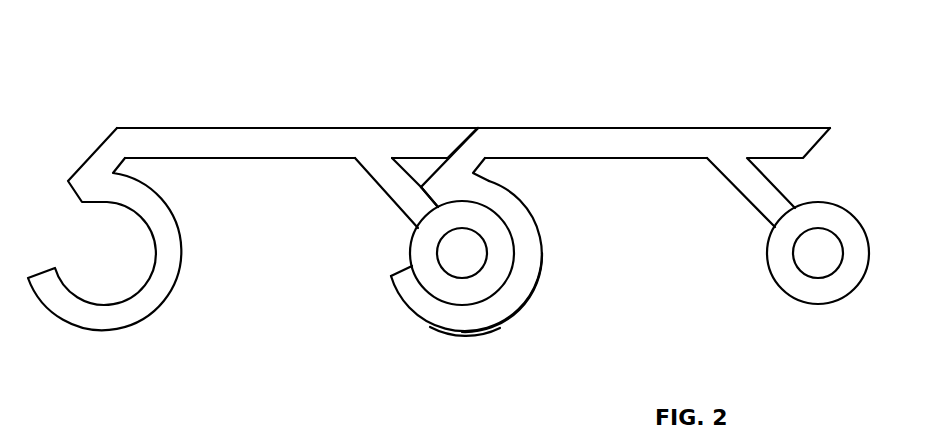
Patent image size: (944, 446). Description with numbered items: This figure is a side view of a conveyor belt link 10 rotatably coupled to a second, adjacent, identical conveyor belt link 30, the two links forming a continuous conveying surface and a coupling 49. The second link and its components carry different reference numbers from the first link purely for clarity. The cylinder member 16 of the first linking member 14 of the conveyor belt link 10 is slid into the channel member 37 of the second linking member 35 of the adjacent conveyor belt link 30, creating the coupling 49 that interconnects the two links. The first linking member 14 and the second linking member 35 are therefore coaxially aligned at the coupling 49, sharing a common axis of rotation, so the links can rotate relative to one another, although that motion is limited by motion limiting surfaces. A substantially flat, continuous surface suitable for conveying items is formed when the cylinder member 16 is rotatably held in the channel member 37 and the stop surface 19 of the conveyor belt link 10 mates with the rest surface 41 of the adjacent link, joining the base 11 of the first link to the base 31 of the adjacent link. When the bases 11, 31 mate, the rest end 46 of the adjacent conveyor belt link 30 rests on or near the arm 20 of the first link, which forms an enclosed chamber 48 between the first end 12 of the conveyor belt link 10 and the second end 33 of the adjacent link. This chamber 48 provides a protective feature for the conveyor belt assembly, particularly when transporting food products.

The conveyor belt link 10 is at (203, 93).
The base 11 is at (297, 140).
The first end 12 is at (425, 110).
The first linking member 14 is at (338, 232).
The cylinder member 16 is at (415, 244).
The stop surface 19 is at (473, 137).
The arm 20 is at (397, 183).
The conveyor belt link 30 is at (684, 64).
The base 31 is at (644, 142).
The second end 33 is at (530, 106).
The second linking member 35 is at (568, 266).
The channel member 37 is at (523, 305).
The rest surface 41 is at (458, 147).
The rest end 46 is at (425, 195).
The enclosed chamber 48 is at (410, 167).
The coupling 49 is at (455, 356).